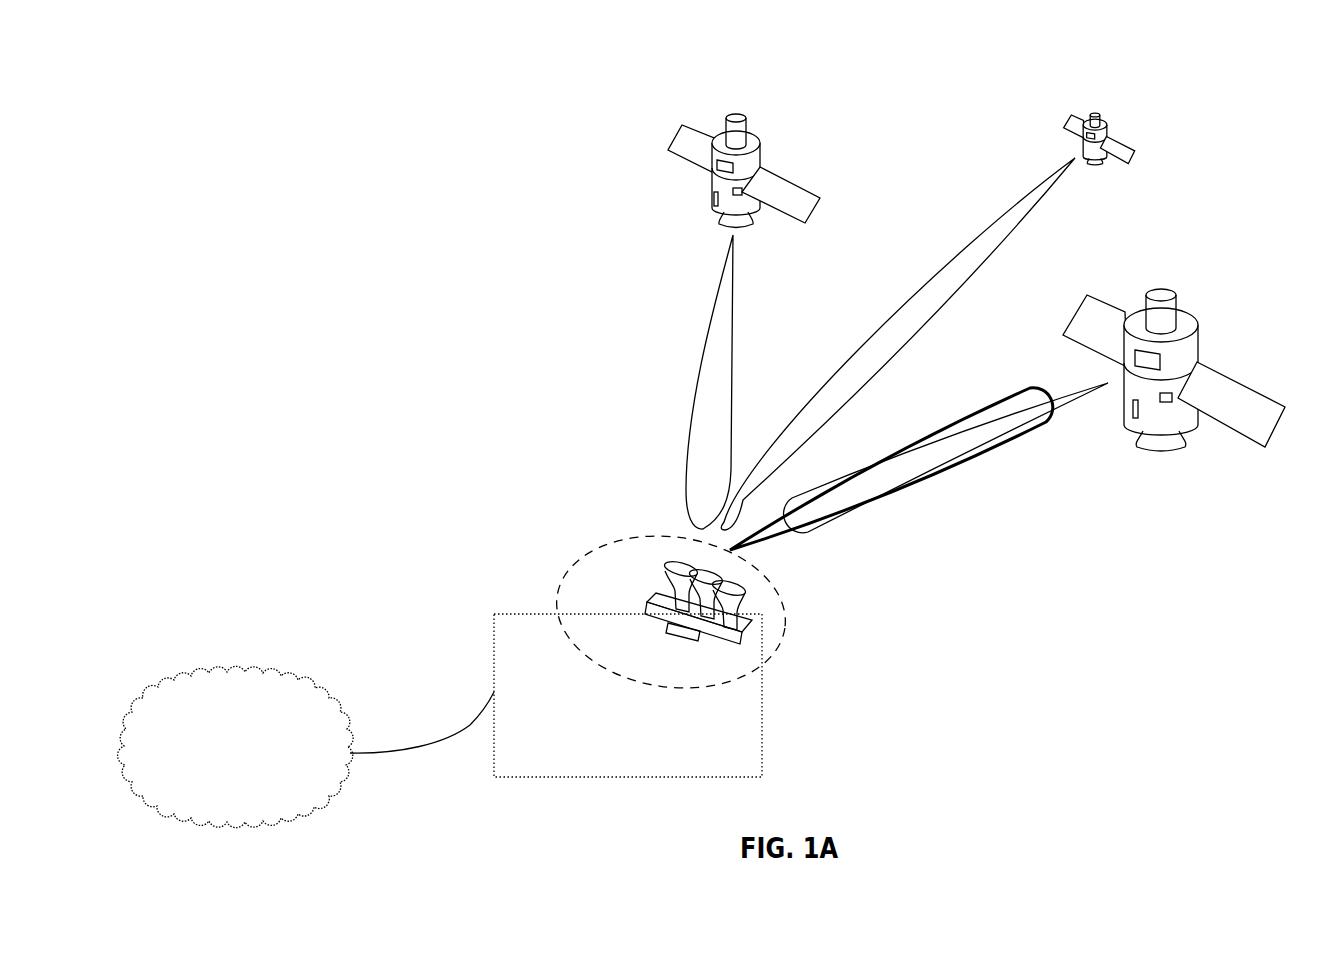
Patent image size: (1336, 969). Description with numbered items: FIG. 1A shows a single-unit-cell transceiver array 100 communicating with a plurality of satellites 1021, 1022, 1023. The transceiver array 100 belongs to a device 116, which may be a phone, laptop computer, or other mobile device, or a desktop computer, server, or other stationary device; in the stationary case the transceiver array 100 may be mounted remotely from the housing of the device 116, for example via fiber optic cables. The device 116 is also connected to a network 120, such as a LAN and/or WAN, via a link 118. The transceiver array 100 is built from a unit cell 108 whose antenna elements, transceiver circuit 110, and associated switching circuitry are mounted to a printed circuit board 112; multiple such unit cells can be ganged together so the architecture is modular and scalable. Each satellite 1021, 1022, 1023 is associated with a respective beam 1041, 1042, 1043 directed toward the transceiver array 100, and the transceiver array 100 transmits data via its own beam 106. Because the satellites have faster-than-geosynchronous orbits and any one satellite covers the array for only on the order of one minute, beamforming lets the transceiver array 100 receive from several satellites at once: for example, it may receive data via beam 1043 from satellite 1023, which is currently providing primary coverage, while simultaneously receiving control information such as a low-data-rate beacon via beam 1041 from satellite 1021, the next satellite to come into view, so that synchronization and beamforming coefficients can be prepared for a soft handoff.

The transceiver array 100 is at (578, 556).
The satellite 1021 is at (735, 121).
The satellite 1022 is at (1094, 110).
The satellite 1023 is at (1156, 290).
The beam 1041 is at (698, 396).
The beam 1042 is at (892, 325).
The beam 1043 is at (1080, 385).
The beam 106 is at (764, 546).
The unit cell 108 is at (674, 607).
The transceiver circuit 110 is at (688, 639).
The printed circuit board 112 is at (650, 605).
The device 116 is at (521, 613).
The link 118 is at (466, 731).
The network 120 is at (224, 671).